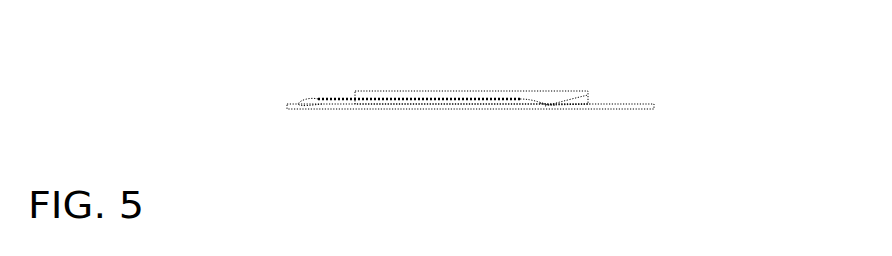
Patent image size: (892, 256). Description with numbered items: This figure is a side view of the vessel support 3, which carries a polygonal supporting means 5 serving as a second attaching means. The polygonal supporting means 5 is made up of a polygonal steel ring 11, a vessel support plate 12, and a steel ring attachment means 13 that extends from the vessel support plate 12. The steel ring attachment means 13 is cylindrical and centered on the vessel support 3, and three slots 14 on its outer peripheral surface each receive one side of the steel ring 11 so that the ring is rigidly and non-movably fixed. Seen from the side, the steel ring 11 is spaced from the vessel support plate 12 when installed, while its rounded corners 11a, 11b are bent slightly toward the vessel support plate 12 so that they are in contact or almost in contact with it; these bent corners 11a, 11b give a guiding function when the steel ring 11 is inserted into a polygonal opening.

The vessel support 3 is at (705, 103).
The polygonal supporting means 5 is at (584, 90).
The polygonal steel ring 11 is at (465, 100).
The corner of the steel ring 11a is at (550, 105).
The corner of the steel ring 11b is at (316, 101).
The vessel support plate 12 is at (622, 110).
The steel ring attachment means 13 is at (415, 93).
The slots 14 is at (587, 100).